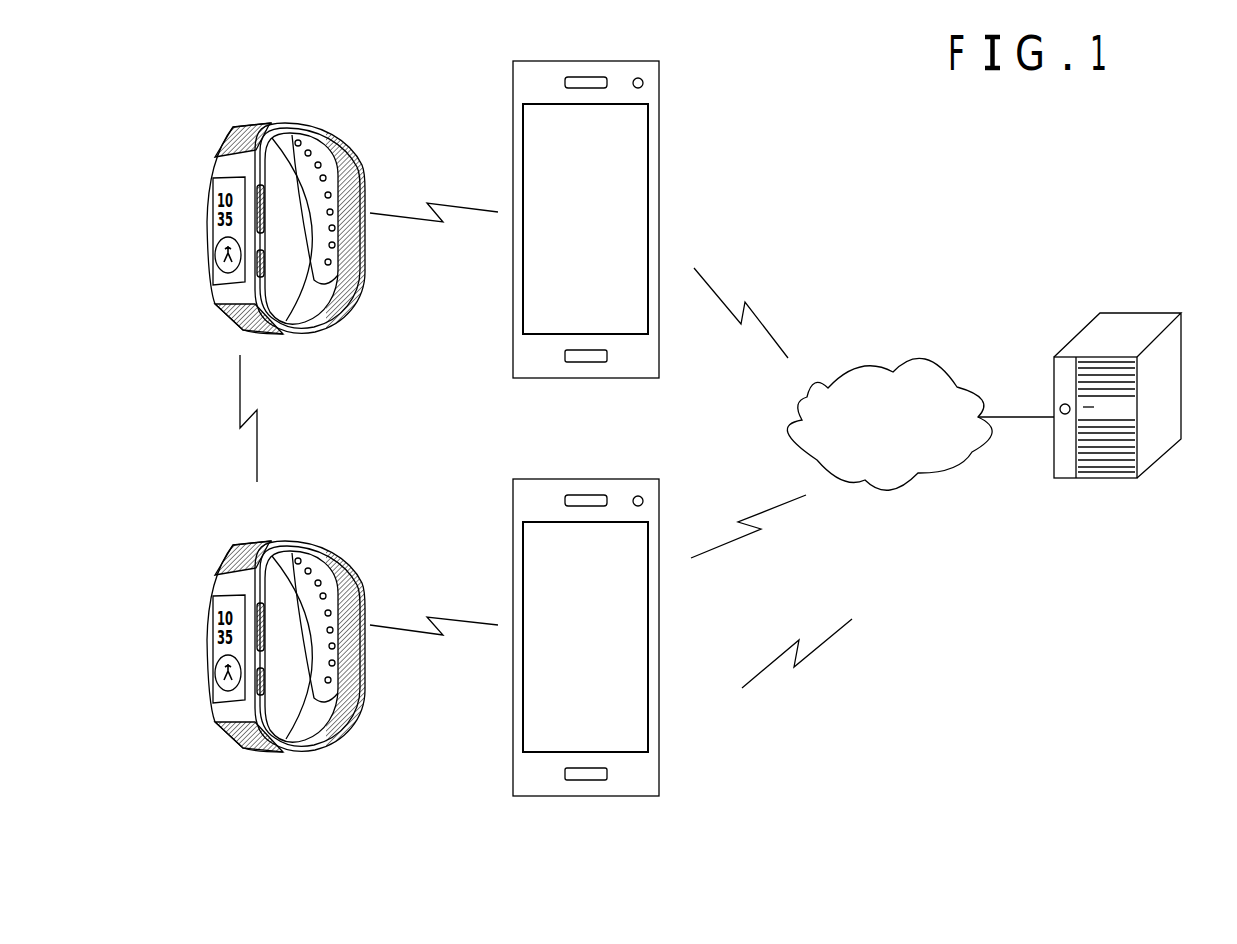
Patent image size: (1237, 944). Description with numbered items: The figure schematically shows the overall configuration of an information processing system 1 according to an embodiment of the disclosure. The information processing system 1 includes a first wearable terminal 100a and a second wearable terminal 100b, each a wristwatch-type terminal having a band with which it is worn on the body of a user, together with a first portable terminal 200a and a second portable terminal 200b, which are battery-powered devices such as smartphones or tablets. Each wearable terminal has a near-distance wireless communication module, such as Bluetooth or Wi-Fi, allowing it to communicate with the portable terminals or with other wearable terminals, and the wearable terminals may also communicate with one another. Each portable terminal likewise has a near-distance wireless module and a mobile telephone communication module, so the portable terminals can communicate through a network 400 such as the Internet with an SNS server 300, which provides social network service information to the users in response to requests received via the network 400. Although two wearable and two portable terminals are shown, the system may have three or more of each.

The information processing system 1 is at (901, 783).
The first wearable terminal 100a is at (327, 134).
The second wearable terminal 100b is at (327, 552).
The first portable terminal 200a is at (660, 62).
The second portable terminal 200b is at (660, 480).
The SNS server 300 is at (1126, 314).
The network 400 is at (918, 358).